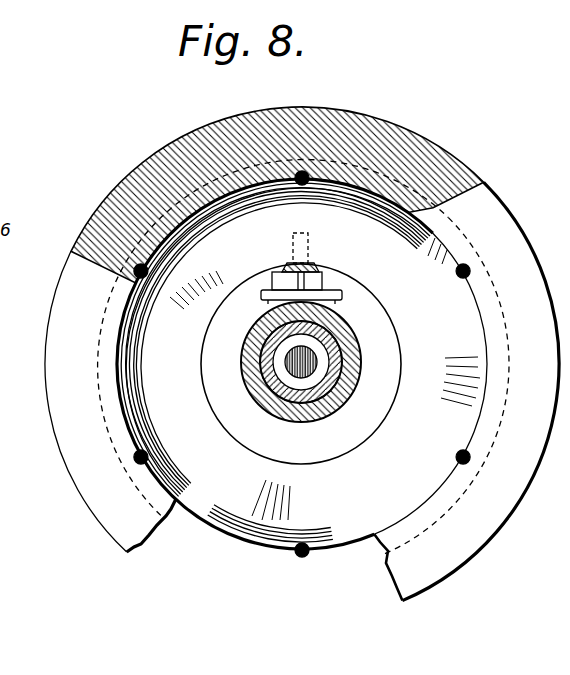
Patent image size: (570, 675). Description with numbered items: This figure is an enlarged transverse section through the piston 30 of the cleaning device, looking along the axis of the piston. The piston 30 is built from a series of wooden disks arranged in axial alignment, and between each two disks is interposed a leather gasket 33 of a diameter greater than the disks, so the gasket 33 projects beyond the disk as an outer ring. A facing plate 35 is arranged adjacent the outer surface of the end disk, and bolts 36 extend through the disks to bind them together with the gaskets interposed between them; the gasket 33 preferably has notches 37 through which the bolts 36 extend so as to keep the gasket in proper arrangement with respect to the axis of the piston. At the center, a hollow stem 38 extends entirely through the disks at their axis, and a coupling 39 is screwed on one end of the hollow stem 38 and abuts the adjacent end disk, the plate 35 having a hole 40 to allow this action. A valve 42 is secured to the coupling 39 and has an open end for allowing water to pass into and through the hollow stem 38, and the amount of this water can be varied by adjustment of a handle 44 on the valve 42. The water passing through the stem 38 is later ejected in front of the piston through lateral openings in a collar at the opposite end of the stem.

The piston 30 is at (86, 350).
The leather gasket 33 is at (341, 128).
The facing plate 35 is at (184, 574).
The bolt 36 is at (456, 270).
The notch 37 is at (470, 456).
The hollow stem 38 is at (265, 383).
The coupling 39 is at (324, 363).
The hole 40 is at (401, 336).
The valve 42 is at (268, 303).
The handle 44 is at (306, 297).